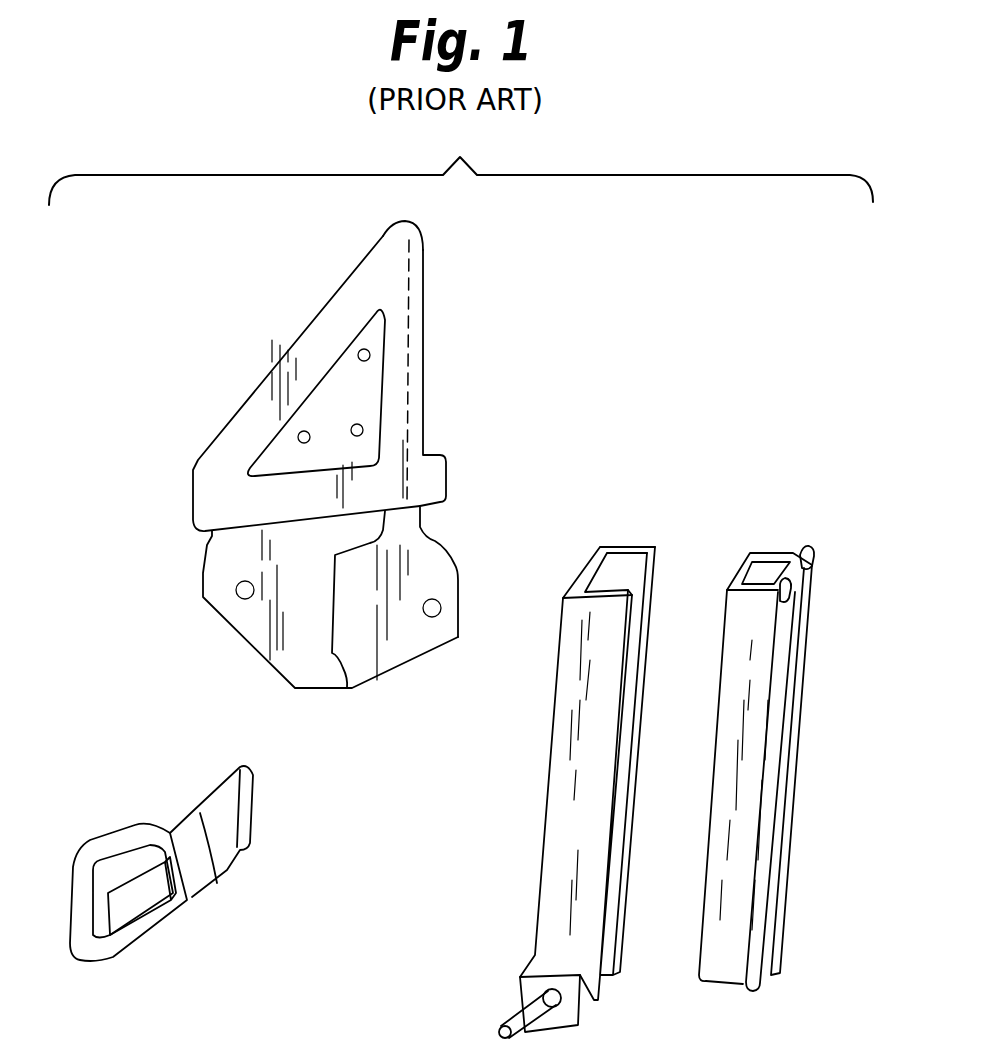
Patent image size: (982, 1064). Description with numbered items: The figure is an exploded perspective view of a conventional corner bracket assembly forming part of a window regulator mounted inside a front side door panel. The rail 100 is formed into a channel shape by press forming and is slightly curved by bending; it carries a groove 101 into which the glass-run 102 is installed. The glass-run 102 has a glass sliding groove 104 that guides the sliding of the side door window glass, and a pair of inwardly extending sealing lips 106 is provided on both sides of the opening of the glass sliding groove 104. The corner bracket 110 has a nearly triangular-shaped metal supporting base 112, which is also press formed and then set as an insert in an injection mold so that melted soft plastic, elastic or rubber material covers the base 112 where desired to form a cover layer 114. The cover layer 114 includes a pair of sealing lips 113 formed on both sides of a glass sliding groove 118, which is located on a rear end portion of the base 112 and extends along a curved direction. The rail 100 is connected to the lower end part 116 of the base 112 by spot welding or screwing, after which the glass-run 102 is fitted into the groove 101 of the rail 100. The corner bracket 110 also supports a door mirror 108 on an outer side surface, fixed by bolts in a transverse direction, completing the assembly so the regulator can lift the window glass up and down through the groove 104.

The rail 100 is at (550, 760).
The groove 101 is at (628, 563).
The glass-run 102 is at (722, 617).
The glass sliding groove 104 is at (765, 572).
The sealing lips 106 is at (793, 590).
The door mirror 108 is at (105, 850).
The corner bracket 110 is at (252, 384).
The metal supporting base 112 is at (207, 585).
The sealing lips 113 is at (423, 325).
The cover layer 114 is at (388, 240).
The lower end part 116 is at (343, 673).
The glass sliding groove 118 is at (423, 263).